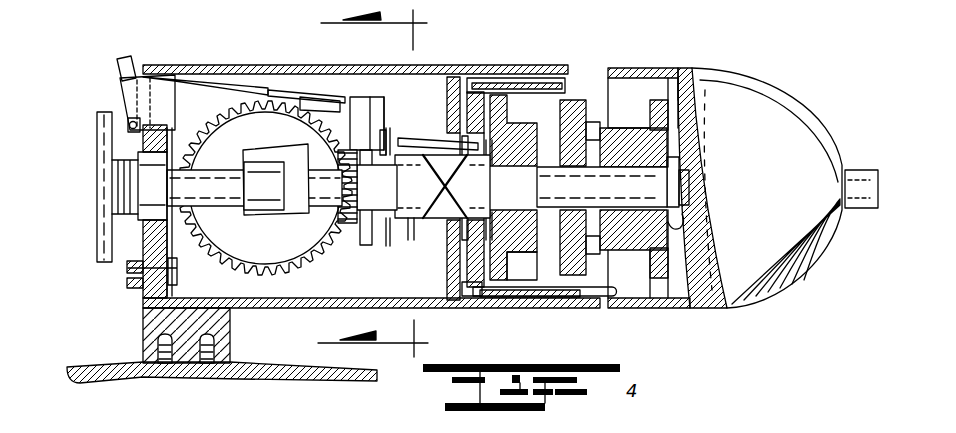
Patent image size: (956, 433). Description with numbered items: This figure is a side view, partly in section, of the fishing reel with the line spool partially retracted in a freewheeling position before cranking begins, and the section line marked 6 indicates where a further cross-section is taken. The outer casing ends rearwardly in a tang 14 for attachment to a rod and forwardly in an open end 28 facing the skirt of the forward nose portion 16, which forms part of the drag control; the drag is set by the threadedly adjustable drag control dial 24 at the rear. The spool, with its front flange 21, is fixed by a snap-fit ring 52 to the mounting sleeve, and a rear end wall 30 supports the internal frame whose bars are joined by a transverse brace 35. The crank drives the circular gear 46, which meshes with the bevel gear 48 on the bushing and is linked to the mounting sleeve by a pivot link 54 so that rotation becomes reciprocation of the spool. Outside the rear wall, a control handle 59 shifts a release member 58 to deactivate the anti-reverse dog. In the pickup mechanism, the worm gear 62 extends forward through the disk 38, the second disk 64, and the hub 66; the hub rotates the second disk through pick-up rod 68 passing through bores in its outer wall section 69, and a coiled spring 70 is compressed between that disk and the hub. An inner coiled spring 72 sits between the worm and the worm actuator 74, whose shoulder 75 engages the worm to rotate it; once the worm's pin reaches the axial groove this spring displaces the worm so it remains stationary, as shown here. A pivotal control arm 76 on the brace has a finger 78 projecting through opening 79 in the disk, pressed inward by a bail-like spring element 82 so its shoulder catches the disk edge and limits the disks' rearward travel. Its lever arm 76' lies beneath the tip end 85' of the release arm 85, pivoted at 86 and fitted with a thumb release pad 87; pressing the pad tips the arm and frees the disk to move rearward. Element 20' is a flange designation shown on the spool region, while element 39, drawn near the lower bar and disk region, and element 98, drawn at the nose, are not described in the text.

The tang 14 is at (143, 332).
The forward nose portion 16 is at (808, 110).
The support block 20' is at (537, 267).
The front flange 21 is at (666, 106).
The drag control dial 24 is at (97, 158).
The open end 28 is at (568, 70).
The rear end wall 30 is at (143, 246).
The transverse brace 35 is at (343, 226).
The disk 38 is at (452, 77).
The bracket 39 is at (470, 296).
The circular gear 46 is at (225, 114).
The bevel gear 48 is at (347, 143).
The ring 52 is at (672, 242).
The pivot link 54 is at (280, 150).
The release member 58 is at (128, 268).
The control handle 59 is at (128, 288).
The worm gear 62 is at (412, 218).
The second disk 64 is at (478, 85).
The hub 66 is at (532, 152).
The pick-up rod 68 is at (600, 297).
The outer wall section 69 is at (525, 75).
The coiled spring 70 is at (497, 125).
The inner concentric coiled spring 72 is at (411, 241).
The worm actuator 74 is at (366, 232).
The shoulder 75 is at (390, 140).
The pivotal control arm 76 is at (396, 96).
The lever arm 76' is at (322, 77).
The finger 78 is at (406, 140).
The opening 79 is at (468, 80).
The bail-like spring element 82 is at (385, 130).
The release arm 85 is at (205, 65).
The forwardmost tip end 85' is at (298, 69).
The pivot 86 is at (130, 124).
The thumb release pad 87 is at (120, 85).
The stud 98 is at (858, 170).
The section line 6- 6 is at (364, 183).